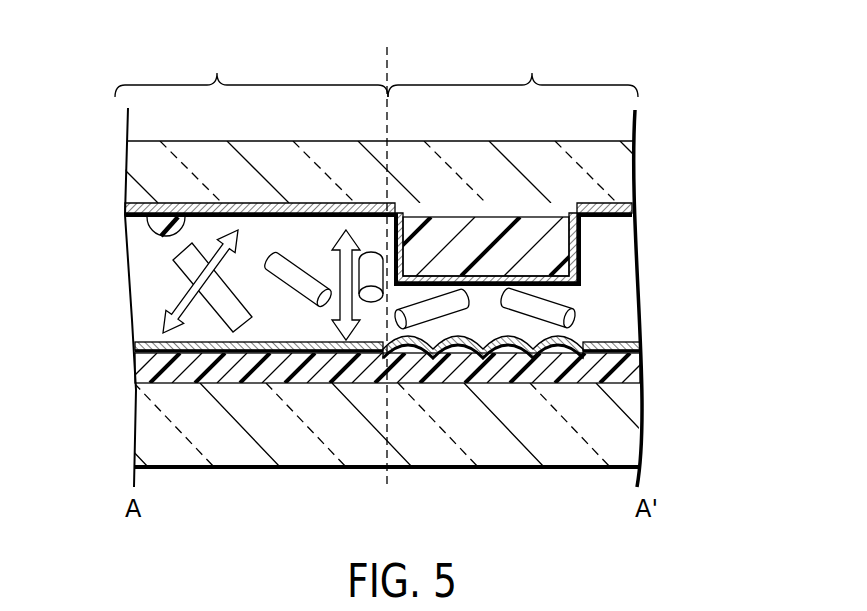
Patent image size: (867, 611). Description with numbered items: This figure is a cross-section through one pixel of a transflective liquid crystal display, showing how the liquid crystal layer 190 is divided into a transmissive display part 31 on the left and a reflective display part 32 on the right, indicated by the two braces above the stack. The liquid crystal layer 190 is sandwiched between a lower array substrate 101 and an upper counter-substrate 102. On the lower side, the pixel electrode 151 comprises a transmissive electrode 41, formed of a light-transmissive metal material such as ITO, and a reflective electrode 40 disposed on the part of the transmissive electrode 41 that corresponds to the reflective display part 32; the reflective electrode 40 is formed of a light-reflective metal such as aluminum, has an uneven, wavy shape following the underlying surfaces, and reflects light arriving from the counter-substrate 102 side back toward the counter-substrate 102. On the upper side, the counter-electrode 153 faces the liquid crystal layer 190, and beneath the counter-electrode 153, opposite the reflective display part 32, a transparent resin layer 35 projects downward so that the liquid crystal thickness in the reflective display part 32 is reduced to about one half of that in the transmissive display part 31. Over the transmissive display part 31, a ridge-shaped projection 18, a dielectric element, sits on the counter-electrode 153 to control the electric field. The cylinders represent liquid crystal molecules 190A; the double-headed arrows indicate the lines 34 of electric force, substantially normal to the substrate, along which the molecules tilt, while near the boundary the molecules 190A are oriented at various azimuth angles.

The transmissive display part 31 is at (251, 71).
The reflective display part 32 is at (513, 72).
The counter-substrate 102 is at (650, 173).
The counter-electrode 153 is at (631, 207).
The transparent resin layer 35 is at (580, 233).
The liquid crystal layer 190 is at (623, 273).
The liquid crystal molecules 190A is at (186, 276).
The ridge-shaped projection 18 is at (148, 233).
The lines of electric force 34 is at (368, 303).
The reflective electrode 40 is at (457, 337).
The pixel electrode 151 is at (429, 333).
The transmissive electrode 41 is at (618, 360).
The array substrate 101 is at (660, 443).